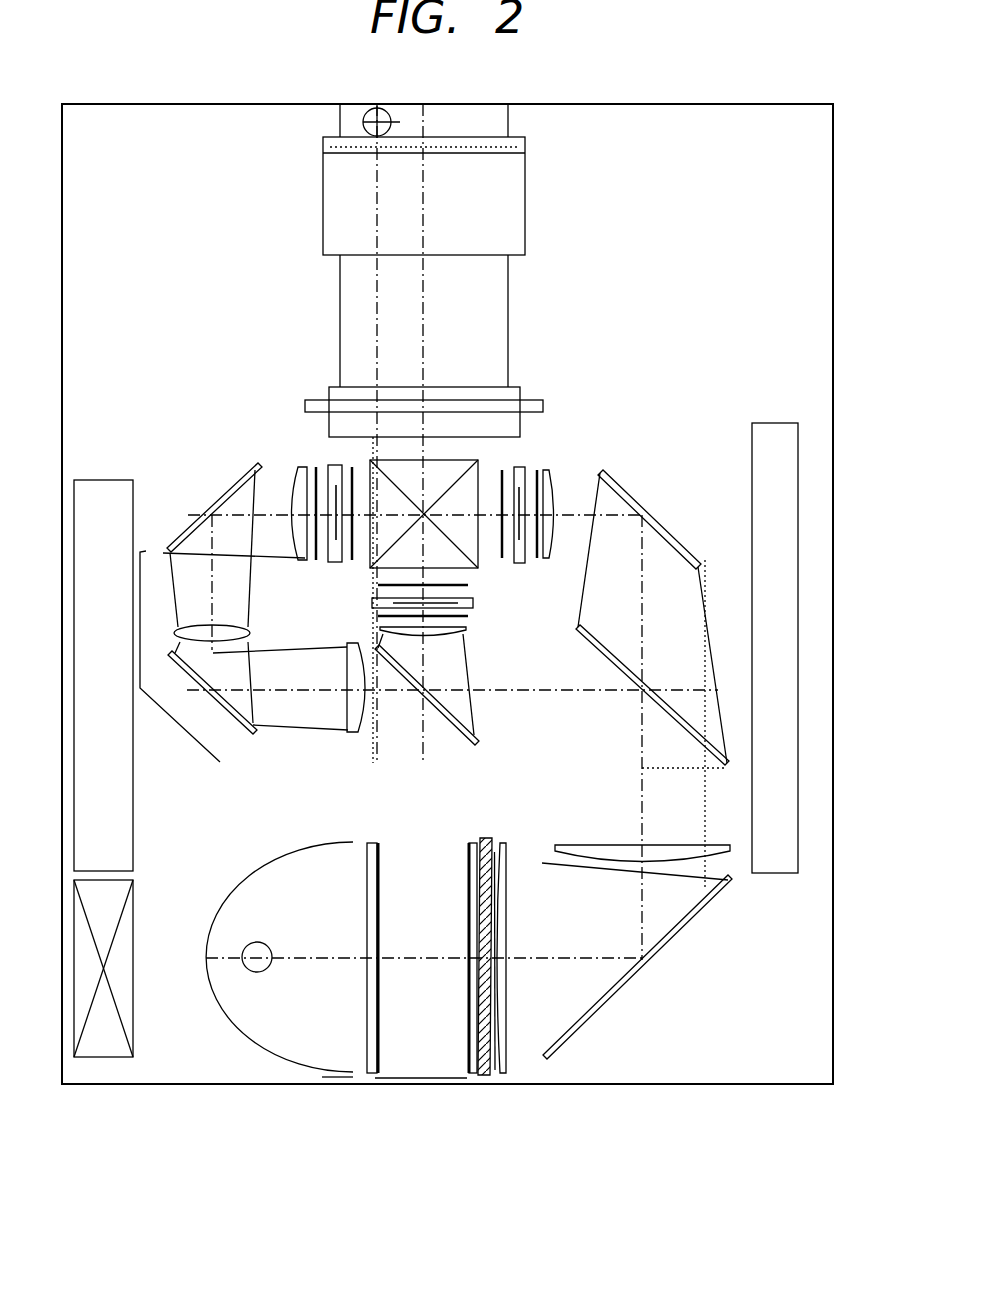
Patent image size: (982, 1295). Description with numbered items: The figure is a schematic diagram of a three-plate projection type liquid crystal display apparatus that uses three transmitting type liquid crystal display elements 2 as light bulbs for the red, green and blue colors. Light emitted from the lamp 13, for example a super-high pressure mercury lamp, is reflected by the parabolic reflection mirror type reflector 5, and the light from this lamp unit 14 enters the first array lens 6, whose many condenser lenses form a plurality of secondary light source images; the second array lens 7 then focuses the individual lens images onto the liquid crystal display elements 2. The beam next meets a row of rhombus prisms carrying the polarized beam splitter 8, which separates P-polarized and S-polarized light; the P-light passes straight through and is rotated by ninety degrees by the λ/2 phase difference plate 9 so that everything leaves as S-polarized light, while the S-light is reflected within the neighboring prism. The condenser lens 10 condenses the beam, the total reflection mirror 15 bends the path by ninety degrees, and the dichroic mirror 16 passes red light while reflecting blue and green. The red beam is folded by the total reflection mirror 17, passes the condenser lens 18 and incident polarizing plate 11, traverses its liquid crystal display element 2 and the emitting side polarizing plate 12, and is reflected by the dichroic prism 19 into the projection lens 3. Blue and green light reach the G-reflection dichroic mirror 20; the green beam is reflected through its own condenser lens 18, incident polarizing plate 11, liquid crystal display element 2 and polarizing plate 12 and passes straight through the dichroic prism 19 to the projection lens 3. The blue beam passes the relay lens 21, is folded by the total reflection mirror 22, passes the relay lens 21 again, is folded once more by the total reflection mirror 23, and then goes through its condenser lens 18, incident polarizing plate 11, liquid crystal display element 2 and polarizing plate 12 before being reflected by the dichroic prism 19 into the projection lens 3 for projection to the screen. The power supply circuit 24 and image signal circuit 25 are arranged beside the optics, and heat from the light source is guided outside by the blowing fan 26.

The liquid crystal display element 2 is at (336, 565).
The projection lens 3 is at (525, 197).
The reflector 5 is at (293, 1067).
The first array lens 6 is at (372, 1075).
The second array lens 7 is at (473, 1075).
The polarized beam splitter 8 is at (486, 1076).
The λ/2 phase difference plate 9 is at (495, 1076).
The condenser lens 10 is at (507, 1070).
The incident polarizing plate 11 is at (316, 562).
The polarizing plate 12 is at (352, 562).
The lamp 13 is at (257, 972).
The lamp unit 14 is at (325, 1158).
The total reflection mirror 15 is at (582, 1030).
The dichroic mirror 16 is at (680, 730).
The total reflection mirror 17 is at (672, 535).
The condenser lens 18 is at (300, 465).
The dichroic prism 19 is at (372, 462).
The G-reflection dichroic mirror 20 is at (458, 735).
The relay lens 21 is at (173, 636).
The total reflection mirror 22 is at (246, 732).
The total reflection mirror 23 is at (225, 490).
The power supply circuit 24 is at (86, 480).
The image signal circuit 25 is at (780, 875).
The blowing fan 26 is at (90, 1058).